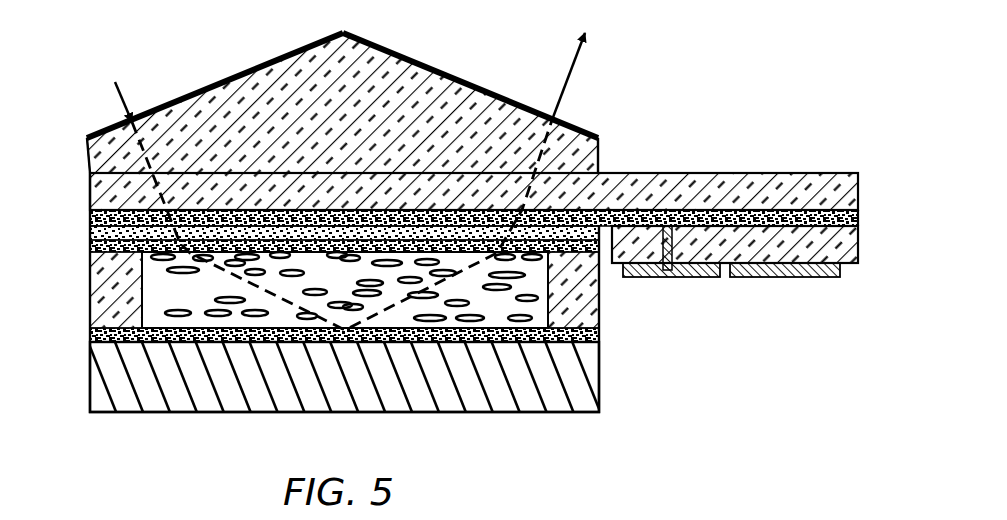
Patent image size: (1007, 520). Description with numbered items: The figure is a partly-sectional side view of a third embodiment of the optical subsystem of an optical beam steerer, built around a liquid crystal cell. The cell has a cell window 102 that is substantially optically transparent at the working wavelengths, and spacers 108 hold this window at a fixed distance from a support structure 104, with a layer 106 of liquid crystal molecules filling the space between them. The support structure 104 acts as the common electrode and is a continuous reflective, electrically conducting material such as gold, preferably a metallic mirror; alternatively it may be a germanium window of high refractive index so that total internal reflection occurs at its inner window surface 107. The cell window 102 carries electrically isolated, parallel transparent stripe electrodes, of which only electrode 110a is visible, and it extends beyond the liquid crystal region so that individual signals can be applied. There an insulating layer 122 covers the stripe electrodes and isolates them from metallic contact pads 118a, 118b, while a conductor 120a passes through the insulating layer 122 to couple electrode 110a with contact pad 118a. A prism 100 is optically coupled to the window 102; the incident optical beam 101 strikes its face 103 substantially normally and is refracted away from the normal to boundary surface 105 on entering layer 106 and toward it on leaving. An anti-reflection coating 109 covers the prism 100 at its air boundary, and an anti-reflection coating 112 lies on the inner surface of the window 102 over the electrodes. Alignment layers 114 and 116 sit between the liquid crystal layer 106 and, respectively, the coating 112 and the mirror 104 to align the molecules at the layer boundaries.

The prism 100 is at (446, 86).
The incident optical beam 101 is at (128, 98).
The cell window 102 is at (89, 192).
The face of prism 103 is at (293, 55).
The support structure 104 is at (600, 372).
The boundary surface 105 is at (415, 212).
The layer of liquid crystal molecules 106 is at (202, 301).
The inner window surface 107 is at (600, 336).
The spacers 108 is at (89, 296).
The anti-reflection coating 109 is at (393, 58).
The optically-transparent electrode 110a is at (858, 215).
The anti-reflection coating 112 is at (403, 222).
The alignment layer 114 is at (304, 254).
The alignment layer 116 is at (496, 328).
The contact pad 118a is at (660, 272).
The contact pad 118b is at (812, 277).
The conductor 120a is at (669, 266).
The insulating layer 122 is at (858, 240).